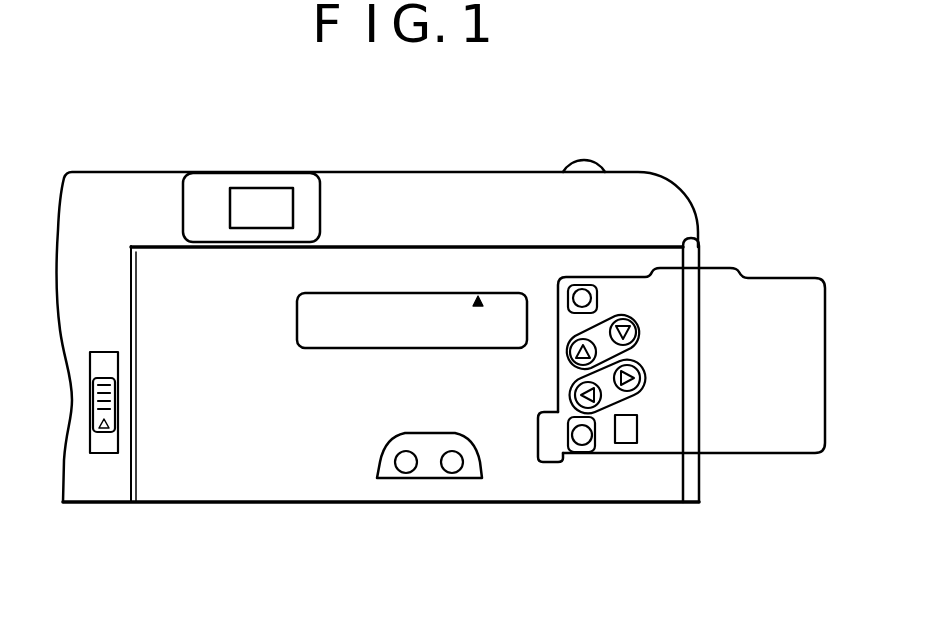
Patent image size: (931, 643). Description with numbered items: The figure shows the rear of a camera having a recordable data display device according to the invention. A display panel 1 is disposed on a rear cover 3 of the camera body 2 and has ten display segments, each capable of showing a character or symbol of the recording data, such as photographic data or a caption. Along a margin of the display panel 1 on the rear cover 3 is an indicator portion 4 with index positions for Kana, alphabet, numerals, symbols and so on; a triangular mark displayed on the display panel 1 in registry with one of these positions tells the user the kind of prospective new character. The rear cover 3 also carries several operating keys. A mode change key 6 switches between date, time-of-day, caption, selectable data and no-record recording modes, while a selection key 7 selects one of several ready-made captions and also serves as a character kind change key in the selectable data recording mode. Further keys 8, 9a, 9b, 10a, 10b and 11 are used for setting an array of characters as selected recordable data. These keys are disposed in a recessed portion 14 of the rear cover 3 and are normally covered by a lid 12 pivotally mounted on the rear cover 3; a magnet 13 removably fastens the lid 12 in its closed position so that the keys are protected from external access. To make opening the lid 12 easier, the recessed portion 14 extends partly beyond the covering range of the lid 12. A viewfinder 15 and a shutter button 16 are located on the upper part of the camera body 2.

The display panel 1 is at (338, 352).
The camera body 2 is at (672, 198).
The rear cover 3 is at (238, 492).
The indicator portion 4 is at (483, 305).
The mode change key 6 is at (405, 473).
The selection key 7 is at (452, 473).
The key 8 is at (581, 297).
The key 9a is at (573, 351).
The key 9b is at (640, 332).
The key 10a is at (574, 404).
The key 10b is at (640, 392).
The key 11 is at (580, 447).
The lid 12 is at (808, 450).
The magnet 13 is at (640, 440).
The recessed portion 14 is at (543, 450).
The viewfinder 15 is at (268, 188).
The shutter button 16 is at (603, 164).